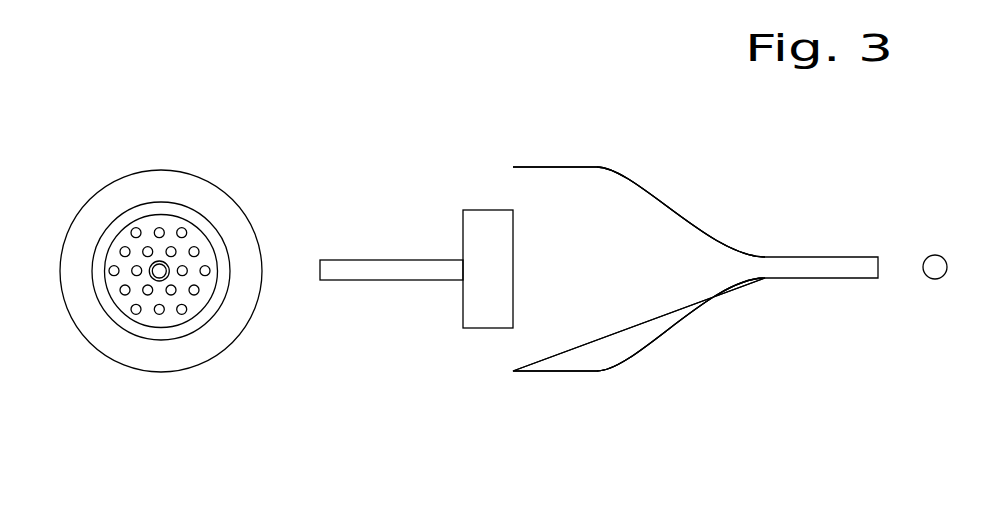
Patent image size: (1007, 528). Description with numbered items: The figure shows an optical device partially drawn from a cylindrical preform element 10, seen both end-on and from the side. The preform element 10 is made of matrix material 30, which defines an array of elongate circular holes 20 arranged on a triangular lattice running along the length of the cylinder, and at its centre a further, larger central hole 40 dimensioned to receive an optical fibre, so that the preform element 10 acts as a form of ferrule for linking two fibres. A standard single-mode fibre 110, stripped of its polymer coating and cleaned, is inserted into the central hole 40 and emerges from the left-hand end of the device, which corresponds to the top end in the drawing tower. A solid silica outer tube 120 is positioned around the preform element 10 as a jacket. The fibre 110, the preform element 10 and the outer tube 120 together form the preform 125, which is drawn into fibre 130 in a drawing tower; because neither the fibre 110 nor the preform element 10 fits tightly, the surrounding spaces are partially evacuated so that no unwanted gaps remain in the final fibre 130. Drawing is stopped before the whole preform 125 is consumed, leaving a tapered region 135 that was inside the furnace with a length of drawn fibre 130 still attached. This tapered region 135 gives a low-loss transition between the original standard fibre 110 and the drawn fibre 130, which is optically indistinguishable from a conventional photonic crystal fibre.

The preform element 10 is at (463, 222).
The elongate circular holes 20 is at (135, 304).
The matrix material 30 is at (148, 302).
The central hole 40 is at (171, 252).
The standard single-mode fibre 110 is at (345, 280).
The solid silica outer tube 120 is at (545, 368).
The preform 125 is at (557, 135).
The drawn fibre 130 is at (927, 278).
The tapered region 135 is at (673, 212).